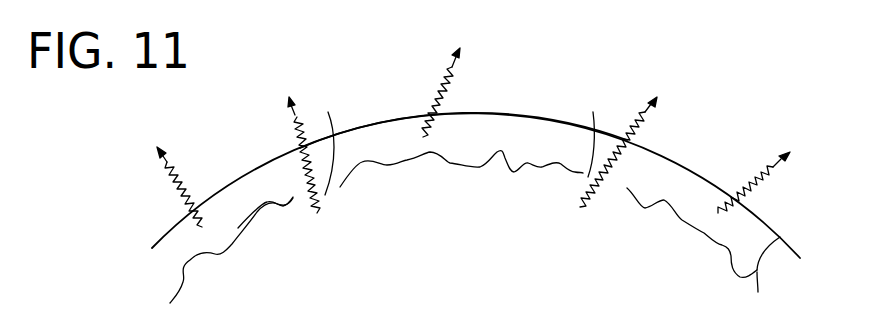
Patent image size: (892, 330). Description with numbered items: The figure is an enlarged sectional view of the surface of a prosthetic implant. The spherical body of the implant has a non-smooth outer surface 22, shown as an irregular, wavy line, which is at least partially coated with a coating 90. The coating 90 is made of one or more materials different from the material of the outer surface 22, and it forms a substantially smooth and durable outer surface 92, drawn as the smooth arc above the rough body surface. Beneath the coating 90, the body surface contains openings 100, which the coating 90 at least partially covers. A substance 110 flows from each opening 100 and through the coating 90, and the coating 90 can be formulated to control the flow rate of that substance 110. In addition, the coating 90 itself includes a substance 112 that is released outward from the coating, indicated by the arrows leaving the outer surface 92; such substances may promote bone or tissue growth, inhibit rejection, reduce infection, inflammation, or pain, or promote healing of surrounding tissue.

The outer surface 22 is at (780, 237).
The coating 90 is at (685, 188).
The outer surface of coating 92 is at (535, 117).
The openings 100 is at (460, 139).
The substance 110 is at (290, 132).
The substance released from coating 112 is at (182, 187).